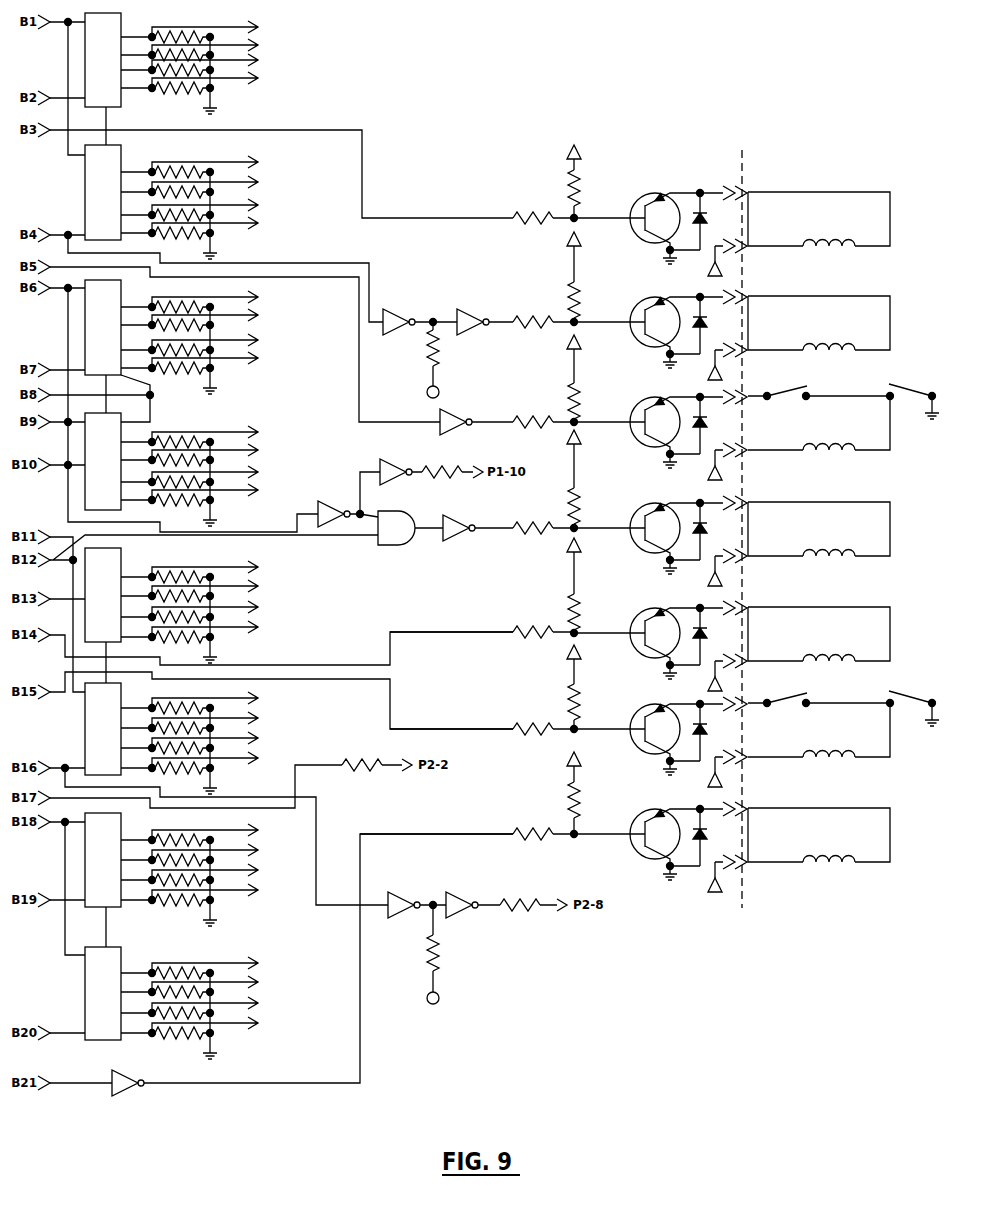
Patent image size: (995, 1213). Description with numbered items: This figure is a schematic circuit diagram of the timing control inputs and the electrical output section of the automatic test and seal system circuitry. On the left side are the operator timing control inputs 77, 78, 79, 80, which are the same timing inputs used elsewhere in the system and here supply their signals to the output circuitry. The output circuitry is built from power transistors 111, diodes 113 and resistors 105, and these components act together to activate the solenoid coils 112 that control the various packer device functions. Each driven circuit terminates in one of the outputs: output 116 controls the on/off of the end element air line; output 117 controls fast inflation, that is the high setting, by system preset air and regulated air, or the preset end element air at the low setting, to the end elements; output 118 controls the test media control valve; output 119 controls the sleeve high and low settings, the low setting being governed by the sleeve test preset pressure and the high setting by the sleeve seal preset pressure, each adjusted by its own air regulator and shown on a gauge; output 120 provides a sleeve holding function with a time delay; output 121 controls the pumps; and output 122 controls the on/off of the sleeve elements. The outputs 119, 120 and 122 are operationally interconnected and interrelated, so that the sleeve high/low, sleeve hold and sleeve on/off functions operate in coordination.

The operator timing control input 77 is at (294, 116).
The operator timing control input 78 is at (256, 395).
The operator timing control input 79 is at (326, 651).
The operator timing control input 80 is at (296, 928).
The resistor 105 is at (530, 212).
The power transistor 111 is at (651, 195).
The solenoid coil 112 is at (826, 250).
The diode 113 is at (716, 222).
The output 116 is at (865, 183).
The output 117 is at (871, 294).
The output 118 is at (915, 354).
The output 119 is at (879, 490).
The output 120 is at (875, 603).
The output 121 is at (874, 764).
The output 122 is at (836, 873).